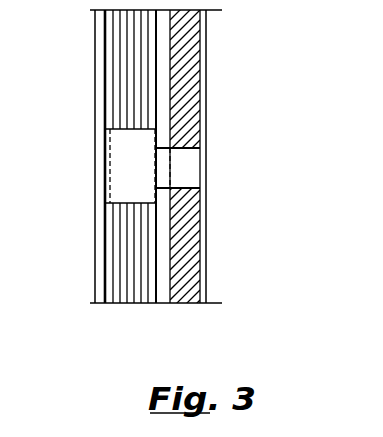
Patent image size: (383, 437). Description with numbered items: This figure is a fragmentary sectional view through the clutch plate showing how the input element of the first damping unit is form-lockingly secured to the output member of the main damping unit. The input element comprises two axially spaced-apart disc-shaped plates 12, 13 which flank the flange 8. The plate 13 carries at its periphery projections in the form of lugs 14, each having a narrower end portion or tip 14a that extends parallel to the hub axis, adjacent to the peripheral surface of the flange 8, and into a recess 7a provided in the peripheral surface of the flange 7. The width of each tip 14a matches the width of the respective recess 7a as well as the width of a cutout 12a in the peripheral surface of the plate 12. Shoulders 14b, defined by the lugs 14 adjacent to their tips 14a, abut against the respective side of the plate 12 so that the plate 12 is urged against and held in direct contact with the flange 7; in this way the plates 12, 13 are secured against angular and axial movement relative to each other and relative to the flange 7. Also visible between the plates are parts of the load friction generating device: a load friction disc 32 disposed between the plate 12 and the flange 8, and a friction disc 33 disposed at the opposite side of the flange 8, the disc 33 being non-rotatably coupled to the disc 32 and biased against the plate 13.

The flange 7 is at (190, 250).
The recesses 7a is at (179, 186).
The flange 8 is at (126, 303).
The plate 12 is at (162, 283).
The cutouts 12a is at (160, 143).
The plate 13 is at (100, 266).
The lugs 14 is at (120, 181).
The tips 14a is at (170, 167).
The shoulders 14b is at (158, 133).
The load friction disc 32 is at (135, 303).
The friction disc 33 is at (110, 303).